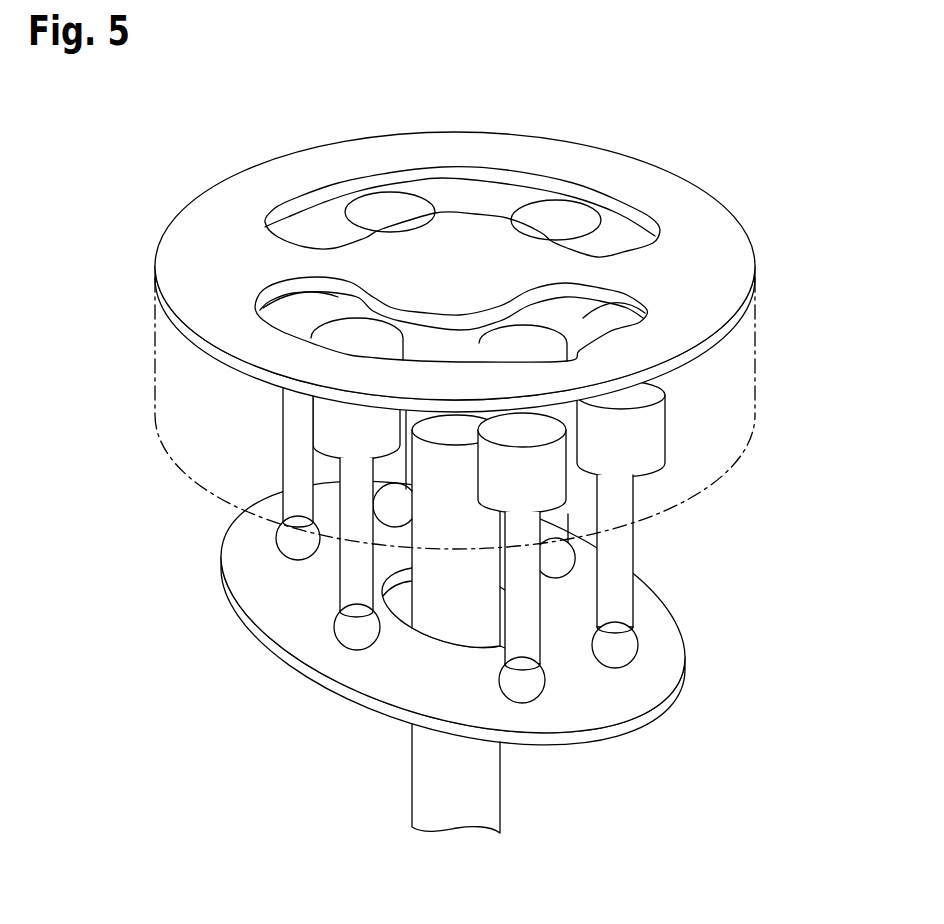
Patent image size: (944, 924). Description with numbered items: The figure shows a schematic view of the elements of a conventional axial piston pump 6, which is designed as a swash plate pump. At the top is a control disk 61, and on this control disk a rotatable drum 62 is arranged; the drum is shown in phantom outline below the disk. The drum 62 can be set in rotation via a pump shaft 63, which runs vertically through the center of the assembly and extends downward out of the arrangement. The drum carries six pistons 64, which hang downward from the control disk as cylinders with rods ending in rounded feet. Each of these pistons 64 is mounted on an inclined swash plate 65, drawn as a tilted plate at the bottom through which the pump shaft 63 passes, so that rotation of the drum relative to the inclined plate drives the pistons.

The axial piston pump 6 is at (166, 147).
The control disk 61 is at (662, 188).
The rotatable drum 62 is at (737, 386).
The pump shaft 63 is at (489, 792).
The pistons 64 is at (622, 553).
The swash plate 65 is at (669, 650).